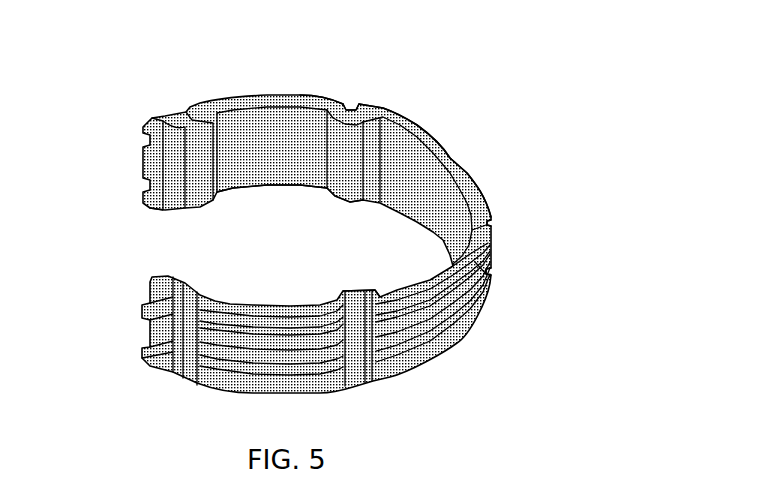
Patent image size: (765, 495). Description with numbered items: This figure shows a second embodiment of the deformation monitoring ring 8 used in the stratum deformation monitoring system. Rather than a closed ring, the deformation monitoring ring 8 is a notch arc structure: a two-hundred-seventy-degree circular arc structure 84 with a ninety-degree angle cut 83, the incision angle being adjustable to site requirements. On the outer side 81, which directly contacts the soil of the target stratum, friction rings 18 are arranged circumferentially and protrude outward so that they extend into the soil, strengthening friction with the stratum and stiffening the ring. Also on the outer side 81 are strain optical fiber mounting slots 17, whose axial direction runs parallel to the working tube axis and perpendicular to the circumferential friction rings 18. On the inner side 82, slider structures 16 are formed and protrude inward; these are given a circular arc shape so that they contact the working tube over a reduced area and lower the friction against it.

The deformation monitoring ring 8 is at (66, 352).
The slider structure 16 is at (357, 150).
The strain optical fiber mounting slot 17 is at (369, 302).
The friction ring 18 is at (488, 233).
The outer side 81 is at (473, 153).
The inner side 82 is at (260, 163).
The angle cut 83 is at (150, 314).
The circular arc structure 84 is at (156, 116).